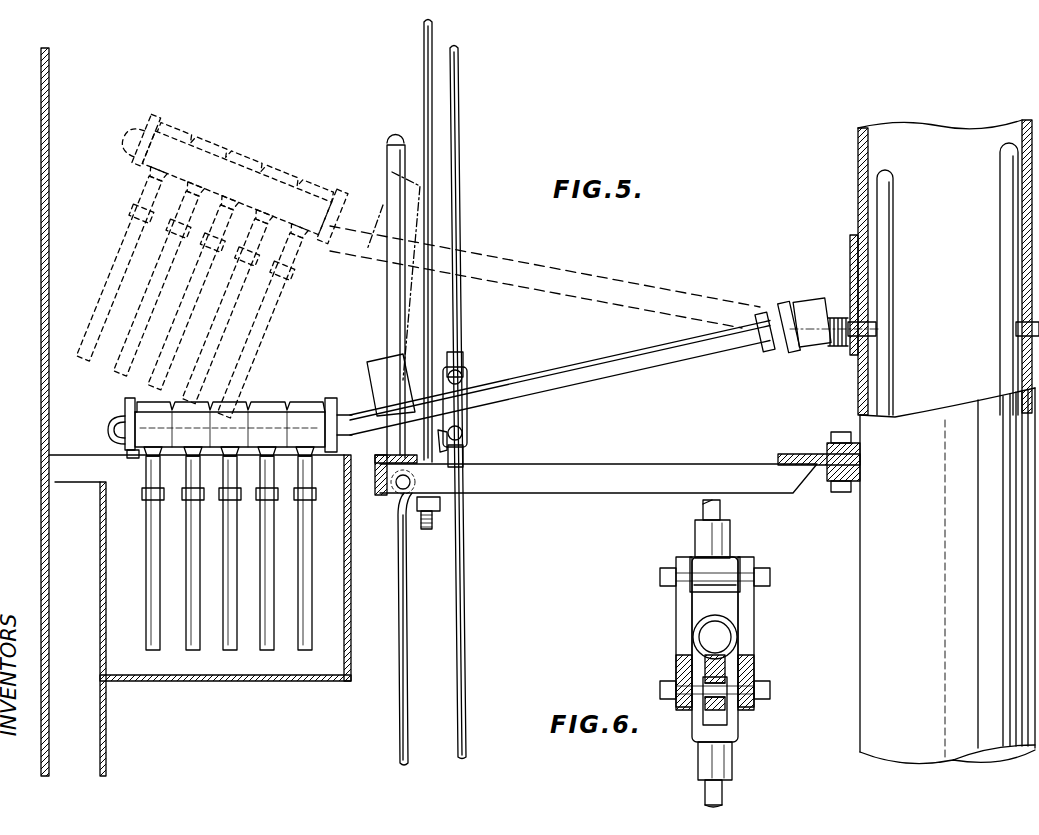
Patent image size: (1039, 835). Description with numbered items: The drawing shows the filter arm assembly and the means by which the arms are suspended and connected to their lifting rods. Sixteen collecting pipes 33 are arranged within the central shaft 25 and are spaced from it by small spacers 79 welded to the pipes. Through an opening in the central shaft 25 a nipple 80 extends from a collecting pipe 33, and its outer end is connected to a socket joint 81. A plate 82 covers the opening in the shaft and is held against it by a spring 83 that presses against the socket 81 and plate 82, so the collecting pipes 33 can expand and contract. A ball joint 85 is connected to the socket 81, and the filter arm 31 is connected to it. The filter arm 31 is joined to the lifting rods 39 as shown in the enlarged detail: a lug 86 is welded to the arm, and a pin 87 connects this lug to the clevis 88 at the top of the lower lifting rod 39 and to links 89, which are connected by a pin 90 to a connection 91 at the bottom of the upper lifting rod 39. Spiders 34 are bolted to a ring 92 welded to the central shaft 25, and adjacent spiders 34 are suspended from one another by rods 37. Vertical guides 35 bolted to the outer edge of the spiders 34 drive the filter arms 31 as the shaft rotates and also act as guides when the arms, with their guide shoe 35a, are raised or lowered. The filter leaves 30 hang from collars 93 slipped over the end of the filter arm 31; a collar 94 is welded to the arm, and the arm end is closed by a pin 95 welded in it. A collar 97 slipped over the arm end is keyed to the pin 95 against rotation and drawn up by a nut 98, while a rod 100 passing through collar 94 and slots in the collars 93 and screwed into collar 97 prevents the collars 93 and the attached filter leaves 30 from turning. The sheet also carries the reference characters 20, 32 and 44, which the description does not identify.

In FIG. 5, the wall 20 is at (40, 288).
In FIG. 5, the central shaft 25 is at (866, 606).
In FIG. 5, the filter leaves 30 is at (192, 587).
In FIG. 5, the filter arms 31 is at (585, 366).
In FIG. 6, the filter arms 31 is at (702, 631).
In FIG. 5, the nut 32 is at (788, 304).
In FIG. 5, the collecting pipes 33 is at (1005, 218).
In FIG. 5, the spiders 34 is at (603, 464).
In FIG. 5, the vertical guides 35 is at (390, 302).
In FIG. 5, the guide shoe 35a is at (367, 363).
In FIG. 5, the rods 37 is at (424, 87).
In FIG. 5, the lifting rods 39 is at (457, 92).
In FIG. 6, the lifting rods 39 is at (704, 507).
In FIG. 5, the trough 44 is at (95, 722).
In FIG. 5, the spacers 79 is at (858, 216).
In FIG. 5, the nipple 80 is at (1028, 316).
In FIG. 5, the socket joint 81 is at (810, 304).
In FIG. 5, the plate 82 is at (850, 256).
In FIG. 5, the spring 83 is at (842, 348).
In FIG. 5, the ball joint 85 is at (767, 348).
In FIG. 5, the lug 86 is at (469, 441).
In FIG. 6, the lug 86 is at (722, 716).
In FIG. 5, the pin 87 is at (466, 430).
In FIG. 6, the pin 87 is at (668, 683).
In FIG. 5, the clevis 88 is at (465, 460).
In FIG. 6, the clevis 88 is at (696, 731).
In FIG. 5, the links 89 is at (470, 396).
In FIG. 6, the links 89 is at (753, 628).
In FIG. 5, the pin 90 is at (460, 376).
In FIG. 6, the pin 90 is at (668, 580).
In FIG. 5, the connection 91 is at (459, 352).
In FIG. 6, the connection 91 is at (731, 541).
In FIG. 5, the ring 92 is at (830, 482).
In FIG. 5, the collars 93 is at (200, 452).
In FIG. 5, the collar 94 is at (330, 398).
In FIG. 5, the pin 95 is at (107, 432).
In FIG. 5, the collar 97 is at (131, 458).
In FIG. 5, the nut 98 is at (125, 412).
In FIG. 5, the rod 100 is at (268, 402).